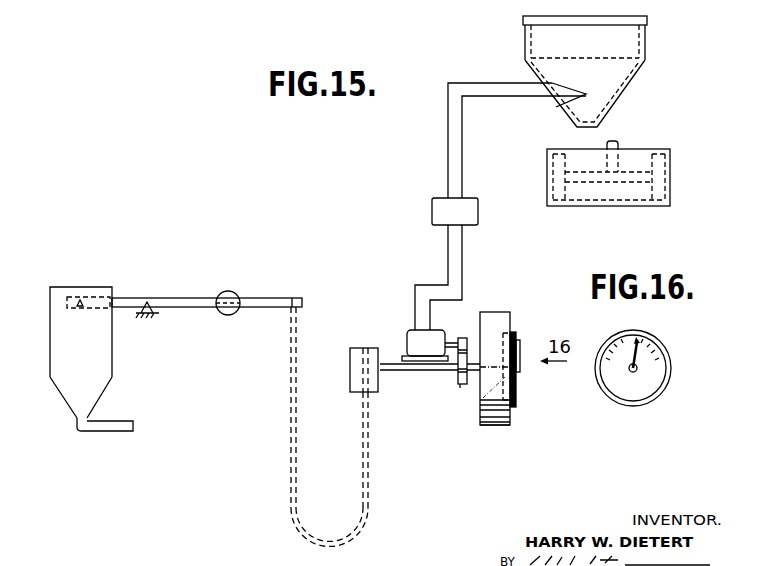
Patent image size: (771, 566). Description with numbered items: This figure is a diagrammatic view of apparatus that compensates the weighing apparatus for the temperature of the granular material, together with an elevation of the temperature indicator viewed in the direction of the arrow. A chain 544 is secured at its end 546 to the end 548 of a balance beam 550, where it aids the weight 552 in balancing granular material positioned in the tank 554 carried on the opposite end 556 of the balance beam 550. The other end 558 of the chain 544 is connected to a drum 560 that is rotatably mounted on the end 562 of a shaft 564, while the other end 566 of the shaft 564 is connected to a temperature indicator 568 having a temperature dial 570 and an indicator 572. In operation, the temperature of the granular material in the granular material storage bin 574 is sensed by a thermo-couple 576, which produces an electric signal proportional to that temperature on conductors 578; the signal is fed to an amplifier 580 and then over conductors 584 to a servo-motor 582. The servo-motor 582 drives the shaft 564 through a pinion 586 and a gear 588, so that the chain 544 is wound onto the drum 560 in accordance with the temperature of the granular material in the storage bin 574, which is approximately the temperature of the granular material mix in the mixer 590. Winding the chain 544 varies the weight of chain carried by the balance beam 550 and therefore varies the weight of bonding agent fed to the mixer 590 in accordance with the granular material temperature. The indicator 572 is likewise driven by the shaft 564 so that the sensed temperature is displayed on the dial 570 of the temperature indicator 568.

In FIG. 15, the chain 544 is at (310, 530).
In FIG. 15, the end of chain 546 is at (297, 318).
In FIG. 15, the end of balance beam 548 is at (265, 298).
In FIG. 15, the balance beam 550 is at (205, 308).
In FIG. 15, the weight 552 is at (228, 291).
In FIG. 15, the tank 554 is at (62, 397).
In FIG. 15, the end of balance beam 556 is at (90, 297).
In FIG. 15, the end of chain 558 is at (367, 424).
In FIG. 15, the drum 560 is at (350, 386).
In FIG. 15, the end of shaft 562 is at (383, 340).
In FIG. 15, the shaft 564 is at (386, 372).
In FIG. 15, the other end of shaft 566 is at (476, 392).
In FIG. 15, the temperature indicator 568 is at (494, 428).
In FIG. 15, the temperature dial 570 is at (514, 392).
In FIG. 16, the temperature dial 570 is at (643, 395).
In FIG. 15, the indicator 572 is at (520, 340).
In FIG. 16, the indicator 572 is at (640, 358).
In FIG. 15, the granular material storage bin 574 is at (523, 40).
In FIG. 15, the thermo-couple 576 is at (584, 96).
In FIG. 15, the conductors 578 is at (450, 165).
In FIG. 15, the amplifier 580 is at (432, 219).
In FIG. 15, the servo-motor 582 is at (412, 330).
In FIG. 15, the conductors 584 is at (447, 246).
In FIG. 15, the pinion 586 is at (465, 337).
In FIG. 15, the gear 588 is at (462, 386).
In FIG. 15, the mixer 590 is at (547, 172).